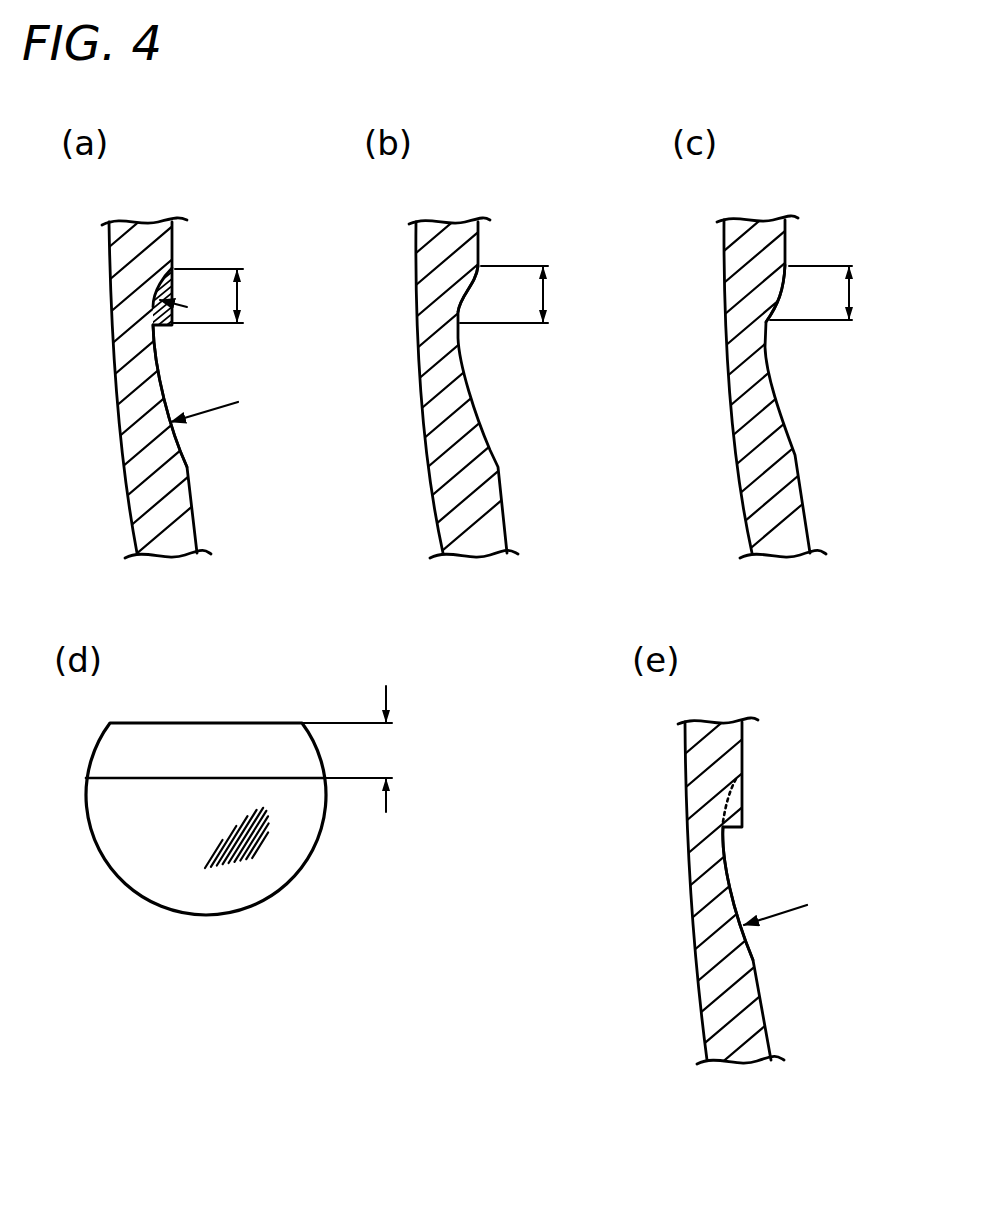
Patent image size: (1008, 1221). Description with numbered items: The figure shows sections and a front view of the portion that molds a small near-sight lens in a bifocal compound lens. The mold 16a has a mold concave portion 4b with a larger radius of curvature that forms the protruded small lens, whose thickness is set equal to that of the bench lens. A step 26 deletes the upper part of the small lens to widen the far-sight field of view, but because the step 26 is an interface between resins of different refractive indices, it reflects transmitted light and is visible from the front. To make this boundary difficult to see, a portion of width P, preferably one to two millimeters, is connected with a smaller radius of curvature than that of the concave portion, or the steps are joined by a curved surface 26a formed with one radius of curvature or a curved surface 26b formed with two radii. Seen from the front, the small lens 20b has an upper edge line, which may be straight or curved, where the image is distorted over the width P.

The mold 16a is at (142, 476).
The step 26 is at (164, 330).
The curved surface 26a is at (488, 302).
The curved surface 26b is at (795, 299).
The mold concave portion 4b is at (187, 446).
The small lens 20b is at (302, 830).